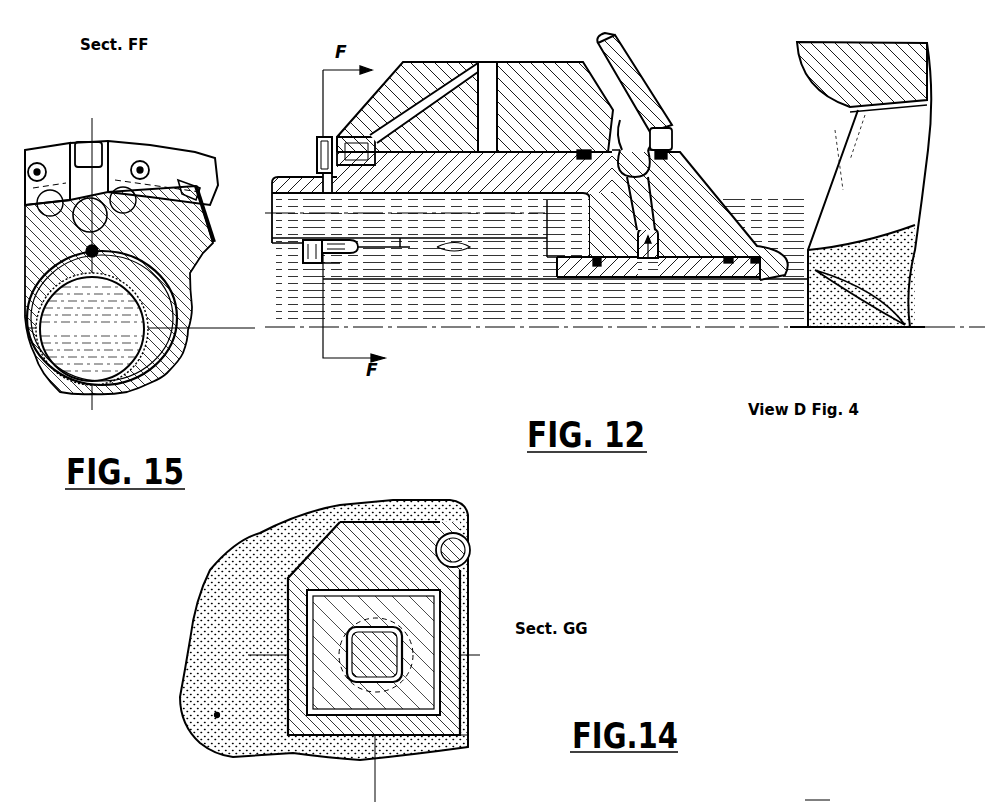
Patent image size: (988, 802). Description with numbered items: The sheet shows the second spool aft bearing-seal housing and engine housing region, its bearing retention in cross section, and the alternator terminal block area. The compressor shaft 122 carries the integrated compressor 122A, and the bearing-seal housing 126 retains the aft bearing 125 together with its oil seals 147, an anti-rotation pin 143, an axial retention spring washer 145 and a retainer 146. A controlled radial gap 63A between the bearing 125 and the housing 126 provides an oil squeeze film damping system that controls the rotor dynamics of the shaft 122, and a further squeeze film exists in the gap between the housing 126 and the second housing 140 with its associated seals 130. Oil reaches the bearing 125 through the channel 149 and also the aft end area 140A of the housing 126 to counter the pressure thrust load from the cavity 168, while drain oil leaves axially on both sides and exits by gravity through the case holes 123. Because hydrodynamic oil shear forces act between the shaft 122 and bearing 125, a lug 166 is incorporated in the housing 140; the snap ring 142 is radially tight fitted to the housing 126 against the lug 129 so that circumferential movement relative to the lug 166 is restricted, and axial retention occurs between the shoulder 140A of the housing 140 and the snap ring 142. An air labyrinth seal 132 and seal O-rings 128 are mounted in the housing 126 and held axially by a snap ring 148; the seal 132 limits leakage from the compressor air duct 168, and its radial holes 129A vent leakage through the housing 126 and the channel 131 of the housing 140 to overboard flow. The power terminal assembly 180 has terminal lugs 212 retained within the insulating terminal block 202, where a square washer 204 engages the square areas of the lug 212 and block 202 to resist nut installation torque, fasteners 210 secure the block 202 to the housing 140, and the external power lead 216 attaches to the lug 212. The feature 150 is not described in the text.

In FIG. 15, the compressor shaft 122 is at (82, 365).
In FIG. 12, the compressor shaft 122 is at (722, 325).
In FIG. 12, the compressor 122A is at (867, 135).
In FIG. 15, the channel / case holes 123 is at (122, 265).
In FIG. 15, the aft bearing 125 is at (102, 315).
In FIG. 12, the aft bearing 125 is at (490, 300).
In FIG. 12, the bearing-seal housing 126 is at (675, 192).
In FIG. 12, the seal O-rings 128 is at (632, 262).
In FIG. 15, the lug of bearing housing 129 is at (78, 188).
In FIG. 12, the radial holes of seal 129A is at (647, 250).
In FIG. 12, the air and oil seals / O-ring 130 is at (640, 143).
In FIG. 12, the channel 131 is at (625, 48).
In FIG. 12, the air labyrinth seal 132 is at (740, 228).
In FIG. 12, the second housing 140 is at (520, 85).
In FIG. 14, the second housing 140 is at (370, 690).
In FIG. 12, the shoulder / aft end area of housing 140A is at (355, 160).
In FIG. 15, the snap ring 142 is at (213, 147).
In FIG. 15, the anti-rotation pin 143 is at (192, 182).
In FIG. 12, the anti-rotation pin 143 is at (318, 262).
In FIG. 12, the axial retention spring washer 145 is at (320, 266).
In FIG. 12, the retainer 146 is at (292, 266).
In FIG. 12, the oil seals 147 is at (345, 258).
In FIG. 12, the snap ring 148 is at (555, 295).
In FIG. 12, the channel 149 is at (488, 112).
In FIG. 12, the fastener feet 150 is at (600, 137).
In FIG. 12, the lug 166 is at (318, 148).
In FIG. 12, the cavity / compressor air duct 168 is at (702, 130).
In FIG. 12, the controlled radial gap 63A is at (400, 250).
In FIG. 14, the power terminal assembly 180 is at (818, 789).
In FIG. 14, the terminal block 202 is at (400, 550).
In FIG. 14, the washer 204 is at (422, 620).
In FIG. 14, the fastener 210 is at (690, 800).
In FIG. 14, the terminal lug 212 is at (398, 801).
In FIG. 14, the external power lead 216 is at (478, 801).